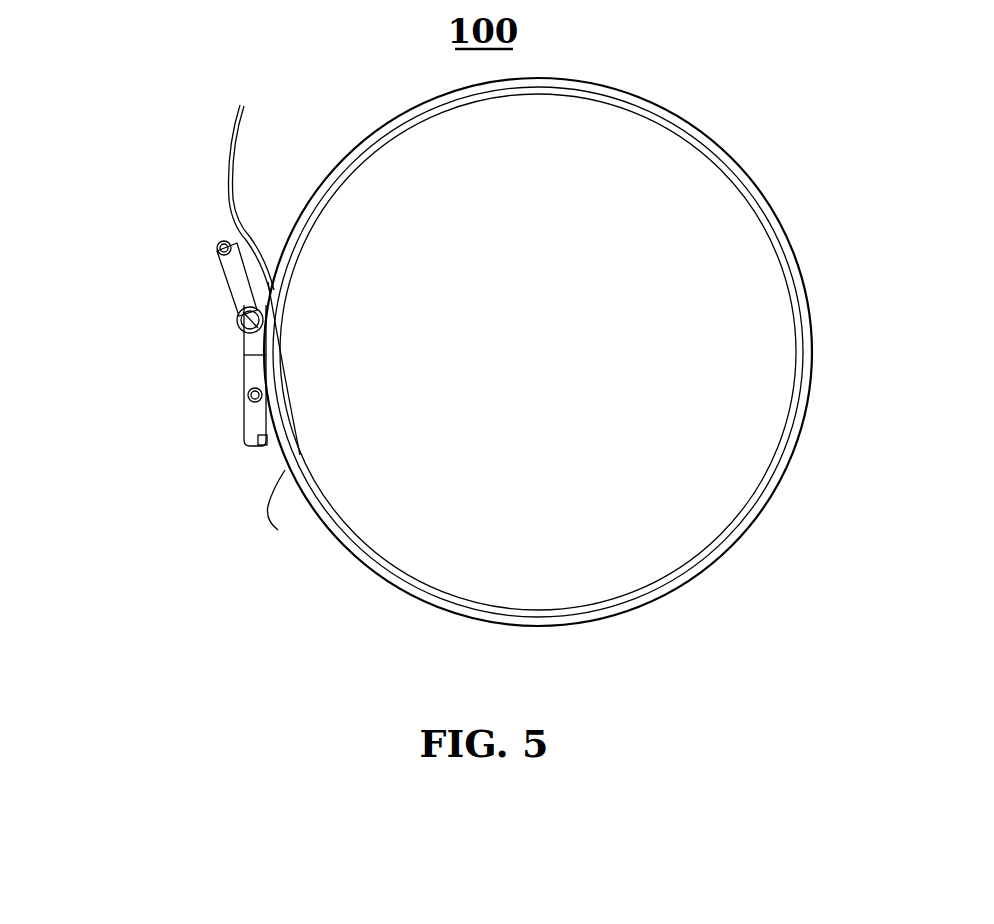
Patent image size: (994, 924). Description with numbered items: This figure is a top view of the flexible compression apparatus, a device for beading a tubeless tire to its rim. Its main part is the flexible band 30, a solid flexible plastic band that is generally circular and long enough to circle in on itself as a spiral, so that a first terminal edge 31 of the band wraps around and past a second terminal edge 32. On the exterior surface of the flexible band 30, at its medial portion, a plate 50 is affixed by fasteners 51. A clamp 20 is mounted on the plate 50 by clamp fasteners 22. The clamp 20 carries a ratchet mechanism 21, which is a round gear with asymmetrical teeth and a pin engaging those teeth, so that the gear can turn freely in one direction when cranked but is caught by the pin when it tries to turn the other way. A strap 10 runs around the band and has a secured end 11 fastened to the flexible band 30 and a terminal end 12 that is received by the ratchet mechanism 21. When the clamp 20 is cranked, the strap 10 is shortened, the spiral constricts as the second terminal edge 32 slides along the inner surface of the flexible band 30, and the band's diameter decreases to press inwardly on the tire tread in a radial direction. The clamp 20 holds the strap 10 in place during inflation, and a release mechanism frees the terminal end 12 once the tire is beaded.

The strap 10 is at (727, 557).
The secured end 11 is at (280, 476).
The terminal end 12 is at (233, 120).
The clamp 20 is at (225, 270).
The ratchet mechanism 21 is at (236, 321).
The clamp fasteners 22 is at (247, 400).
The flexible band 30 is at (797, 384).
The first terminal edge 31 is at (785, 240).
The second terminal edge 32 is at (300, 457).
The plate 50 is at (267, 423).
The fasteners 51 is at (263, 443).